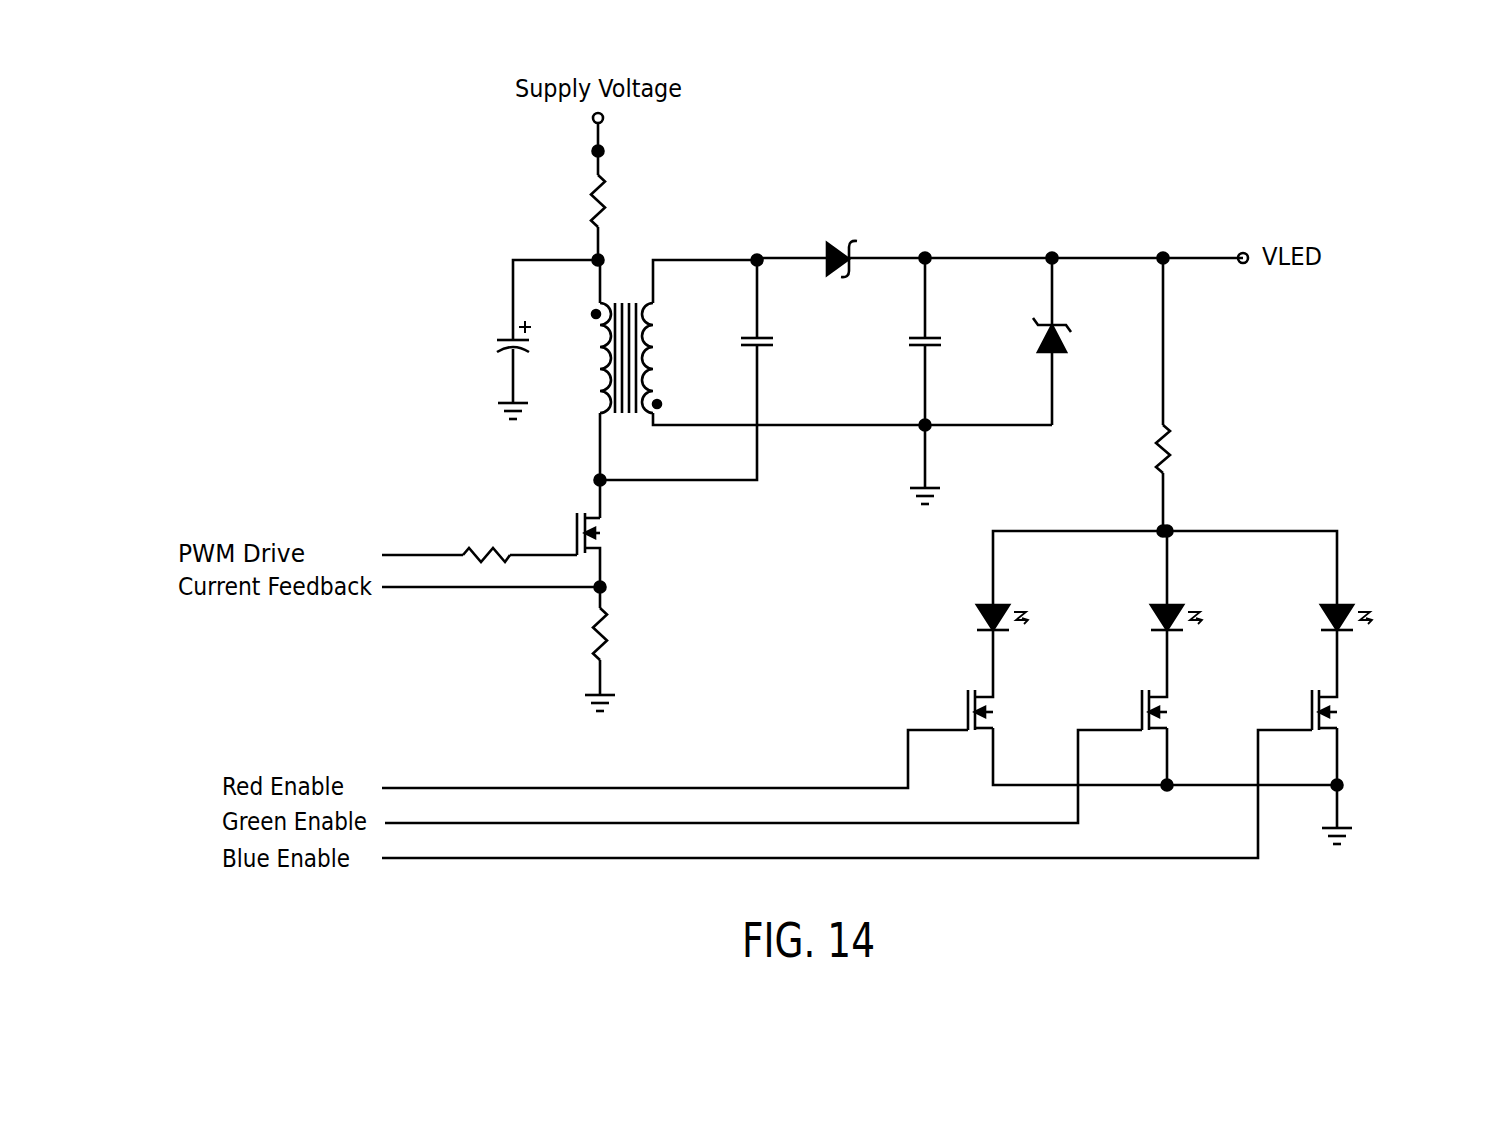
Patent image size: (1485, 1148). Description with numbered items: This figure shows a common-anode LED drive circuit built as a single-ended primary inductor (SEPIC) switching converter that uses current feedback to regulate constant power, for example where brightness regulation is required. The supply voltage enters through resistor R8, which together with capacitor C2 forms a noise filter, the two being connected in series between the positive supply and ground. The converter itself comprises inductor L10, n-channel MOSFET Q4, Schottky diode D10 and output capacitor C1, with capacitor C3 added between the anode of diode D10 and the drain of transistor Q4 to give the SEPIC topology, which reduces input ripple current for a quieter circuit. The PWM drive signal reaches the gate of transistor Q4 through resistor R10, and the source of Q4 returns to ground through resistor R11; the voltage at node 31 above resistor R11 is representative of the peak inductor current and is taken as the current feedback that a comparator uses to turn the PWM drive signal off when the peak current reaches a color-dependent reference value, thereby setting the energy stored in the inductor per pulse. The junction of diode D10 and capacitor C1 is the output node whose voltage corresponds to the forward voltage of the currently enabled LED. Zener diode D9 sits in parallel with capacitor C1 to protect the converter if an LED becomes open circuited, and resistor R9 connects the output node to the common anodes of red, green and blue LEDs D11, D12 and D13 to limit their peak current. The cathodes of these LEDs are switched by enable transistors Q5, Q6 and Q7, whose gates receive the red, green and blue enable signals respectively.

The node 31 is at (484, 592).
The resistor R8 is at (604, 208).
The capacitor C2 is at (510, 340).
The inductor L10 is at (656, 335).
The capacitor C3 is at (762, 342).
The Schottky diode D10 is at (842, 243).
The capacitor C1 is at (931, 342).
The Zener diode D9 is at (1060, 323).
The resistor R9 is at (1170, 442).
The resistor R10 is at (466, 548).
The n-channel MOSFET Q4 is at (605, 547).
The resistor R11 is at (607, 622).
The red LED D11 is at (1003, 604).
The green LED D12 is at (1177, 604).
The blue LED D13 is at (1347, 604).
The n-channel MOSFET Q5 is at (998, 718).
The n-channel MOSFET Q6 is at (1172, 718).
The n-channel MOSFET Q7 is at (1342, 718).